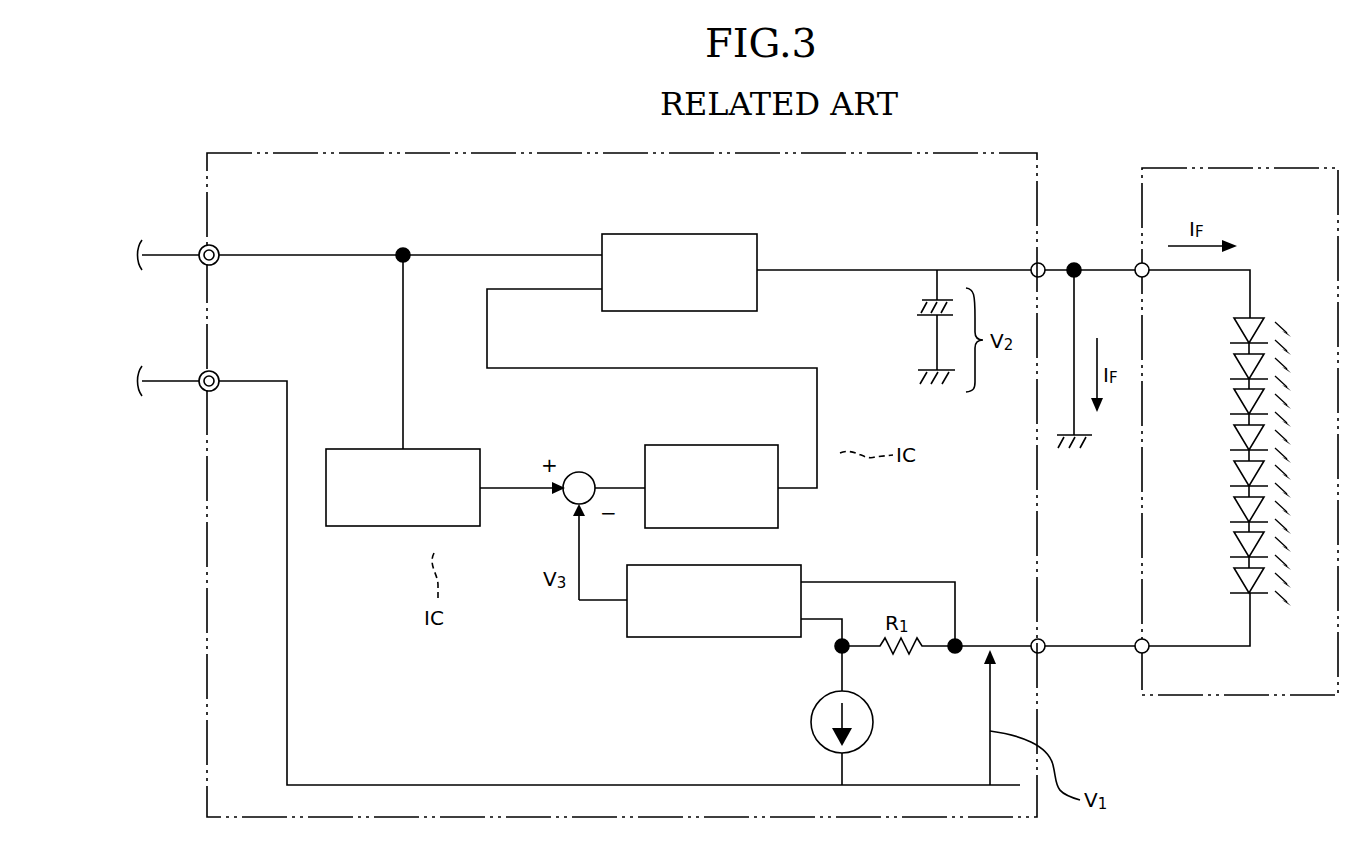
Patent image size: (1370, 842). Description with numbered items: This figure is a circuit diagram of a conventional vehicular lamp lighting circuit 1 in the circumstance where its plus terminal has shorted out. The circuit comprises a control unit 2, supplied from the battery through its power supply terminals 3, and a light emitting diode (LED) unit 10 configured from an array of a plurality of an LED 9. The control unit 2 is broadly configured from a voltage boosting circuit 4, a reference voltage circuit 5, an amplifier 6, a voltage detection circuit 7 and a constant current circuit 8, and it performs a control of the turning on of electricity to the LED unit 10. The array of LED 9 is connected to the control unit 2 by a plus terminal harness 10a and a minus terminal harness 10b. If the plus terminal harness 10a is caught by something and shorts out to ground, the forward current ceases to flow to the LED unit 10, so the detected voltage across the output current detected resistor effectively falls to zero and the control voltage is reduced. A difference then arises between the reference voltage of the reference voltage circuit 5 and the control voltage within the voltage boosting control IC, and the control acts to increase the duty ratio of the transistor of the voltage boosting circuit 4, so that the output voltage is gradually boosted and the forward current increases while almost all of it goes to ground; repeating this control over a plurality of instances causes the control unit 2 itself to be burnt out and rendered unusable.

The light emitting device 1 is at (1094, 148).
The control unit 2 is at (300, 153).
The power supply terminals 3 is at (200, 248).
The voltage boosting circuit 4 is at (712, 234).
The reference voltage circuit 5 is at (368, 449).
The amplifier 6 is at (733, 445).
The voltage detection circuit 7 is at (772, 565).
The constant current circuit 8 is at (873, 718).
The LED 9 is at (1240, 332).
The light emitting diode (LED) unit 10 is at (1258, 168).
The plus terminal harness 10a is at (1110, 268).
The minus terminal harness 10b is at (1115, 650).